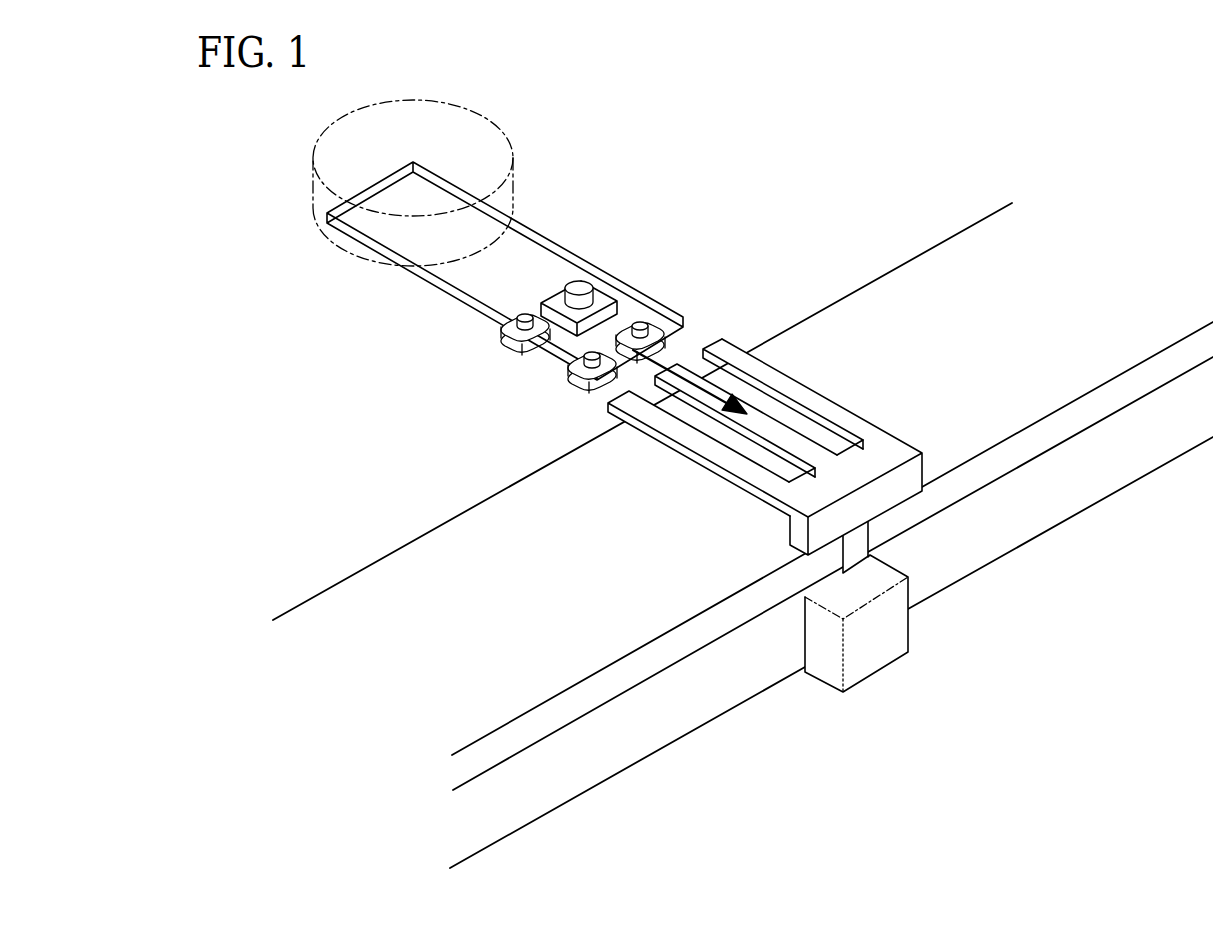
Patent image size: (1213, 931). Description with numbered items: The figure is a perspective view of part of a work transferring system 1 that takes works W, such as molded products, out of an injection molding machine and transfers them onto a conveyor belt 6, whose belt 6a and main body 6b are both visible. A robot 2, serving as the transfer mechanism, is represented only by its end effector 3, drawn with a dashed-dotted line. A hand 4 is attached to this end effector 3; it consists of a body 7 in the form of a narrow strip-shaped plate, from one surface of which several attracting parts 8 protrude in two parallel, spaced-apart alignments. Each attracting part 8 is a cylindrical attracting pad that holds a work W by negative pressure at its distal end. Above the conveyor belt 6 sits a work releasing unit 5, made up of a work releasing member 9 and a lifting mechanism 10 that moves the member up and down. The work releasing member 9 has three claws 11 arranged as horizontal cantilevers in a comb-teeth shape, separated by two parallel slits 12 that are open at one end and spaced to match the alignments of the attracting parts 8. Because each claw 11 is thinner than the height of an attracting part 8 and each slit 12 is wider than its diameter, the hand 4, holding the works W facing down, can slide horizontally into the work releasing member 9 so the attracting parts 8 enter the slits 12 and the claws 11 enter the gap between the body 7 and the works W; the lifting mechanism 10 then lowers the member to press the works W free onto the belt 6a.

The work transferring system 1 is at (866, 128).
The robot 2 is at (618, 133).
The end effector 3 is at (308, 182).
The hand 4 is at (440, 288).
The work releasing unit 5 is at (797, 412).
The conveyor belt 6 is at (743, 535).
The belt 6a is at (442, 585).
The main body 6b is at (680, 712).
The body 7 is at (531, 262).
The attracting parts 8 is at (580, 288).
The work releasing member 9 is at (915, 468).
The lifting mechanism 10 is at (880, 642).
The claws 11 is at (742, 340).
The slits 12 is at (815, 420).
The works W is at (566, 279).